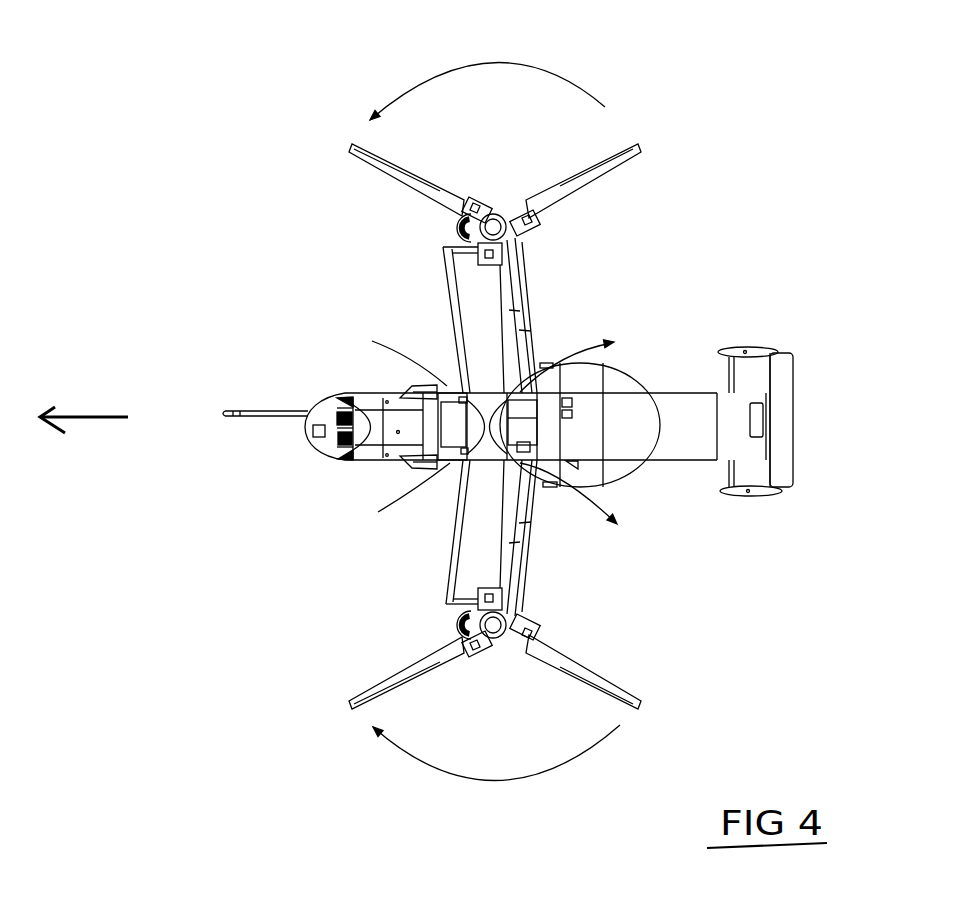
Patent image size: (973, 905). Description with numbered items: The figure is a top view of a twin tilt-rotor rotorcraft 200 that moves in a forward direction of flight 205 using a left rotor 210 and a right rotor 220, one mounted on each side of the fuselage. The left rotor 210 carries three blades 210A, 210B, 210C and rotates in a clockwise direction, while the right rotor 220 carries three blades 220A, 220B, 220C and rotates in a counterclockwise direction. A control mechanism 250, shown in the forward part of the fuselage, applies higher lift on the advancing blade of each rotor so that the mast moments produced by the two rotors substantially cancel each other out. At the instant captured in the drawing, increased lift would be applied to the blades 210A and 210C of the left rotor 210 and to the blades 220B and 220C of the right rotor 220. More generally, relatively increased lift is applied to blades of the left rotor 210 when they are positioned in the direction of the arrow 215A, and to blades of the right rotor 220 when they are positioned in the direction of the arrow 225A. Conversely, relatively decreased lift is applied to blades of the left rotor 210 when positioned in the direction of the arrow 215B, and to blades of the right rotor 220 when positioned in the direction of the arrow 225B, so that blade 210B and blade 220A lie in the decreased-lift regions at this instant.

The twin tilt-rotor rotorcraft 200 is at (589, 344).
The forward direction of flight 205 is at (90, 418).
The left rotor 210 is at (514, 584).
The blade 210A is at (380, 682).
The blade 210B is at (487, 554).
The blade 210C is at (625, 617).
The arrow 215A is at (597, 743).
The arrow 215B is at (605, 503).
The right rotor 220 is at (547, 253).
The blade 220A is at (500, 298).
The blade 220B is at (407, 167).
The blade 220C is at (590, 168).
The arrow 225A is at (563, 80).
The arrow 225B is at (612, 345).
The control mechanism 250 is at (330, 413).